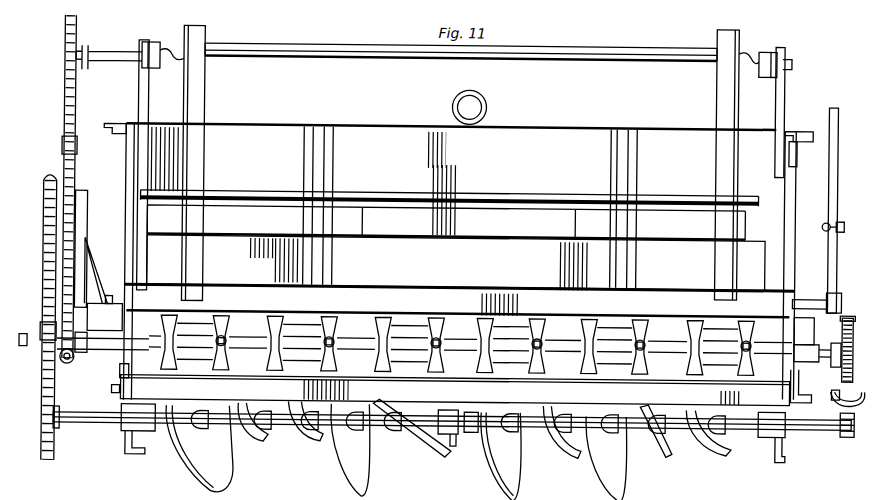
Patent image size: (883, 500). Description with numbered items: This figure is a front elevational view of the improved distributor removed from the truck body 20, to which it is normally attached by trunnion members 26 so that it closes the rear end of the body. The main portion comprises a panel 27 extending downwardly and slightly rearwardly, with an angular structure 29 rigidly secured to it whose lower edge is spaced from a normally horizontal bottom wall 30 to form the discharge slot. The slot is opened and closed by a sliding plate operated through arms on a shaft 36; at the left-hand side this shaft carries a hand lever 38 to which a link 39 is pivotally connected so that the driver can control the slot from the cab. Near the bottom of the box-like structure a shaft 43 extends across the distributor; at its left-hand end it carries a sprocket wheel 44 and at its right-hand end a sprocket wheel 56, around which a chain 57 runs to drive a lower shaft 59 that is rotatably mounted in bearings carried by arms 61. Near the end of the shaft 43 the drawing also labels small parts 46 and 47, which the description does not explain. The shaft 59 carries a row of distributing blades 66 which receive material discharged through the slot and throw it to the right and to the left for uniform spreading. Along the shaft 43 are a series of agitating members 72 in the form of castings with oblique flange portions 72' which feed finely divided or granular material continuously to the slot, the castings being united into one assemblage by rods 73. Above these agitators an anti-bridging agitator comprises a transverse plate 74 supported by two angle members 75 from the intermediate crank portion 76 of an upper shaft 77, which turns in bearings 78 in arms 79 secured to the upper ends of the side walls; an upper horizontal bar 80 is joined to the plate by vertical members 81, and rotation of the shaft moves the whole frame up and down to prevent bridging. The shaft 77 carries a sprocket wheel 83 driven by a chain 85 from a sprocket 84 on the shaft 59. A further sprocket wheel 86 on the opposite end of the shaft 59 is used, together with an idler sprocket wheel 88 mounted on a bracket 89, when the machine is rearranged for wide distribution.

The body of a truck 20 is at (430, 311).
The trunnion members 26 is at (111, 137).
The panel 27 is at (410, 146).
The angular structure 29 is at (101, 304).
The horizontal wall 30 is at (124, 380).
The shaft 36 is at (812, 296).
The hand lever 38 is at (837, 194).
The link 39 is at (825, 227).
The shaft 43 is at (86, 359).
The sprocket wheel 44 is at (850, 313).
The nut 46 is at (833, 389).
The lever 47 is at (838, 402).
The sprocket wheel 56 is at (41, 336).
The chain 57 is at (113, 393).
The shaft 59 is at (74, 428).
The arms 61 is at (133, 452).
The distributing blades 66 is at (351, 470).
The agitating members 72 is at (189, 332).
The flange portions 72' is at (510, 352).
The rods 73 is at (240, 358).
The transverse plate 74 is at (486, 248).
The angle members 75 is at (203, 98).
The intermediate crank portion 76 is at (346, 58).
The shaft 77 is at (110, 55).
The bearings 78 is at (158, 45).
The arms 79 is at (137, 102).
The upper horizontal bar 80 is at (470, 193).
The vertical members 81 is at (362, 223).
The sprocket wheel 83 is at (62, 23).
The sprocket 84 is at (70, 367).
The chain 85 is at (63, 150).
The sprocket wheel 86 is at (854, 433).
The idler sprocket wheel 88 is at (46, 186).
The bracket 89 is at (87, 210).